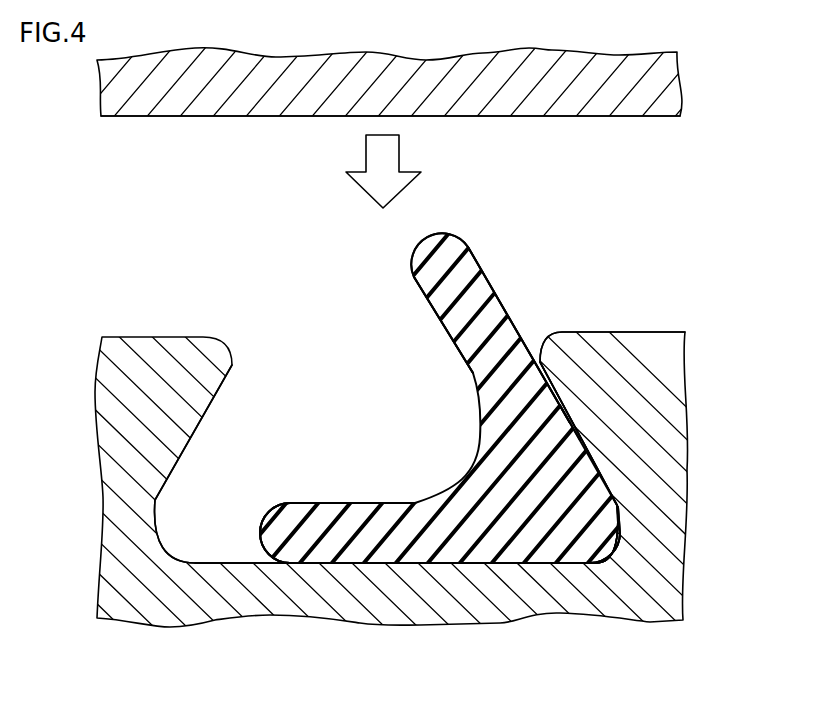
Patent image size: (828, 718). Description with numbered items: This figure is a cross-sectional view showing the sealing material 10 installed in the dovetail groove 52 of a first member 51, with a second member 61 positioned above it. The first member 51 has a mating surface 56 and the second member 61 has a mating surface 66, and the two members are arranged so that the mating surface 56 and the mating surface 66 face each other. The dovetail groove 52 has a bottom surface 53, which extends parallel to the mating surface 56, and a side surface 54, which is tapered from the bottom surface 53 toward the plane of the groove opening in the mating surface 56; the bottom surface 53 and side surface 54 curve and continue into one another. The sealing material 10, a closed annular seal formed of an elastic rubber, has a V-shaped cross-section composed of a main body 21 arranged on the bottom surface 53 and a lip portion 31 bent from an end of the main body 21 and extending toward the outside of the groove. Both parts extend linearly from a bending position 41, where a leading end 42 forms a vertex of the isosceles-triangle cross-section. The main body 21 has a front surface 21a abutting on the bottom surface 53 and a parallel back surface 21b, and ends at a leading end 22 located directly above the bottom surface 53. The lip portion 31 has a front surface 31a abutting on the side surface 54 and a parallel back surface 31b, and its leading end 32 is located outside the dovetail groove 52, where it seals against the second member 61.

The sealing material 10 is at (480, 236).
The main body 21 is at (320, 527).
The front surface 21a is at (372, 566).
The back surface 21b is at (372, 502).
The leading end 22 is at (262, 533).
The lip portion 31 is at (472, 333).
The front surface 31a is at (490, 281).
The back surface 31b is at (432, 310).
The leading end 32 is at (430, 234).
The bending position 41 is at (592, 538).
The leading end 42 is at (618, 542).
The first member 51 is at (117, 394).
The dovetail groove 52 is at (236, 391).
The bottom surface 53 is at (248, 563).
The side surface 54 is at (572, 452).
The mating surface 56 is at (658, 332).
The second member 61 is at (114, 95).
The mating surface 66 is at (655, 117).